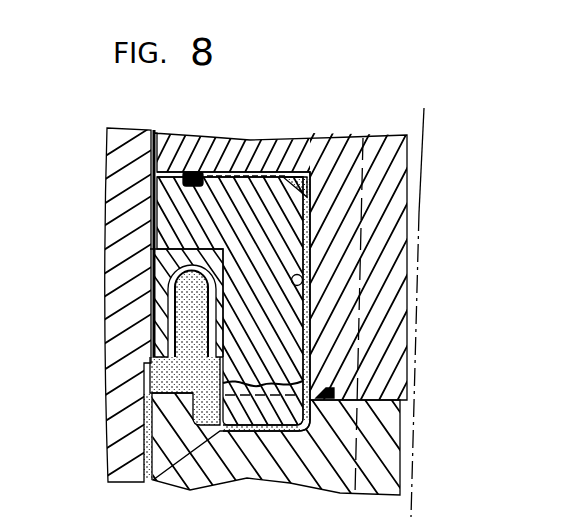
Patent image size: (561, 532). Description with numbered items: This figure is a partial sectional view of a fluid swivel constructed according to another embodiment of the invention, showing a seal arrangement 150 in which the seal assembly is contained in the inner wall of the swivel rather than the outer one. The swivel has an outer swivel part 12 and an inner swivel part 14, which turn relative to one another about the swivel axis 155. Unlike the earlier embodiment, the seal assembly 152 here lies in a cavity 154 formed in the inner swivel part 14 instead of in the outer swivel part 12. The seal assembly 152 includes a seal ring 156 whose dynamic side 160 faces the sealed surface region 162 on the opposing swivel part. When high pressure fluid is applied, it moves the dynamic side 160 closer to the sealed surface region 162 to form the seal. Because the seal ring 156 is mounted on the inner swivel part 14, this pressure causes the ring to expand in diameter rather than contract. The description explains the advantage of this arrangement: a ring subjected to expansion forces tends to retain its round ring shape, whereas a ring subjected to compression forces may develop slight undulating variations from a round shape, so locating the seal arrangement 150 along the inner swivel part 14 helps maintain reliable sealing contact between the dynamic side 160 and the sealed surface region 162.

The outer swivel part 12 is at (122, 486).
The inner swivel part 14 is at (205, 487).
The seal arrangement 150 is at (338, 130).
The seal assembly 152 is at (139, 250).
The cavity 154 is at (303, 279).
The swivel axis 155 is at (425, 180).
The seal ring 156 is at (257, 171).
The dynamic side 160 is at (152, 196).
The sealed surface region 162 is at (168, 132).